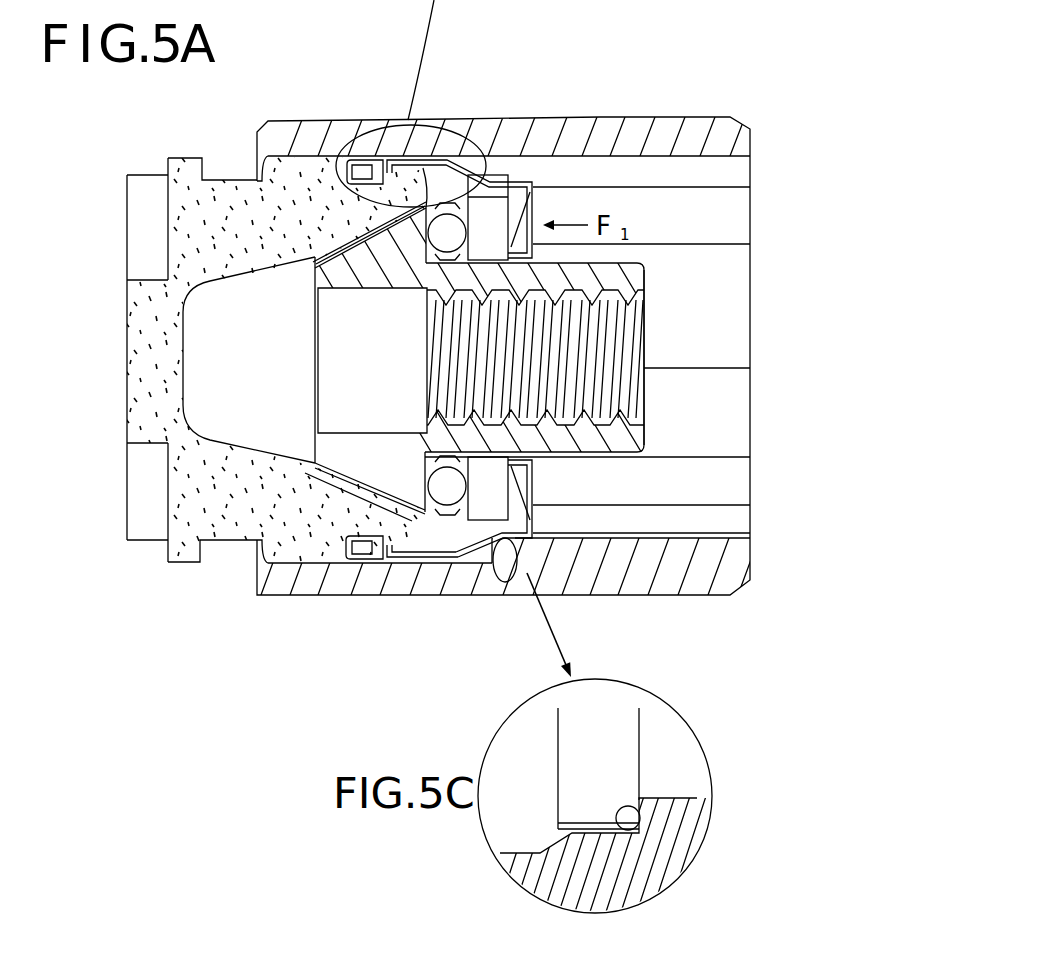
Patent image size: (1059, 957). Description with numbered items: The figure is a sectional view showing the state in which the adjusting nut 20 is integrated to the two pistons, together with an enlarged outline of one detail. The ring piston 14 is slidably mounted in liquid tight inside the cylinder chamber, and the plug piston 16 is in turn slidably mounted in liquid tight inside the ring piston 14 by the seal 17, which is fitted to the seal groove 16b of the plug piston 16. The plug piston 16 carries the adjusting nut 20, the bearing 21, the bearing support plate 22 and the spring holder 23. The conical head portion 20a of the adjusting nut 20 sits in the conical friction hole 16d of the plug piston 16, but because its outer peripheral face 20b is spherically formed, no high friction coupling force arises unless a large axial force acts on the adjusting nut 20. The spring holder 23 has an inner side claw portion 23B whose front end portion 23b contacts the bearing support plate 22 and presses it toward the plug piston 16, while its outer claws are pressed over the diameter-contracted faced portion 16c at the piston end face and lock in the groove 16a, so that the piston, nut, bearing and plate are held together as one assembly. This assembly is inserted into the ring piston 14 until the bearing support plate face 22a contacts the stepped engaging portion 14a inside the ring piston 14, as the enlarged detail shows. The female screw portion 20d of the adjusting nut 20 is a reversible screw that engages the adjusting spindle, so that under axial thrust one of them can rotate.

In FIG. 5A, the ring piston 14 is at (667, 572).
In FIG. 5C, the stepped engaging portion 14a is at (620, 838).
In FIG. 5A, the plug piston 16 is at (197, 500).
In FIG. 5A, the groove 16a is at (396, 545).
In FIG. 5A, the seal groove 16b is at (340, 563).
In FIG. 5A, the faced portion 16c is at (425, 520).
In FIG. 5A, the conical friction hole 16d is at (427, 197).
In FIG. 5A, the seal 17 is at (360, 166).
In FIG. 5A, the adjusting nut 20 is at (400, 463).
In FIG. 5A, the conical head portion 20a is at (252, 540).
In FIG. 5A, the outer peripheral face 20b is at (357, 236).
In FIG. 5A, the female screw portion 20d is at (625, 418).
In FIG. 5A, the bearing 21 is at (447, 495).
In FIG. 5A, the bearing support plate 22 is at (500, 545).
In FIG. 5C, the bearing support plate face 22a is at (640, 810).
In FIG. 5A, the spring holder 23 is at (508, 500).
In FIG. 5A, the front end portion 23b is at (517, 478).
In FIG. 5A, the inner side claw portion 23B is at (751, 505).